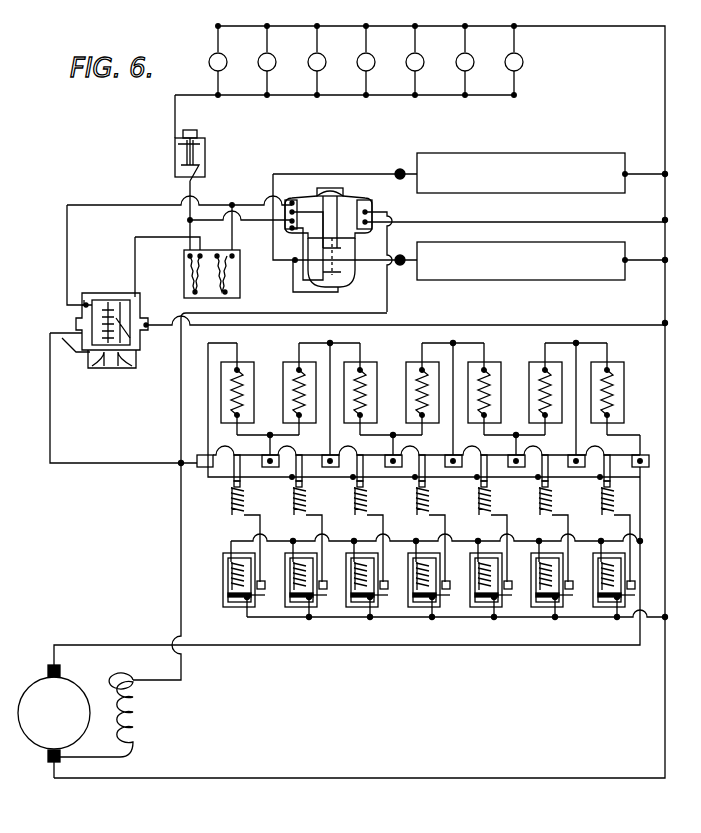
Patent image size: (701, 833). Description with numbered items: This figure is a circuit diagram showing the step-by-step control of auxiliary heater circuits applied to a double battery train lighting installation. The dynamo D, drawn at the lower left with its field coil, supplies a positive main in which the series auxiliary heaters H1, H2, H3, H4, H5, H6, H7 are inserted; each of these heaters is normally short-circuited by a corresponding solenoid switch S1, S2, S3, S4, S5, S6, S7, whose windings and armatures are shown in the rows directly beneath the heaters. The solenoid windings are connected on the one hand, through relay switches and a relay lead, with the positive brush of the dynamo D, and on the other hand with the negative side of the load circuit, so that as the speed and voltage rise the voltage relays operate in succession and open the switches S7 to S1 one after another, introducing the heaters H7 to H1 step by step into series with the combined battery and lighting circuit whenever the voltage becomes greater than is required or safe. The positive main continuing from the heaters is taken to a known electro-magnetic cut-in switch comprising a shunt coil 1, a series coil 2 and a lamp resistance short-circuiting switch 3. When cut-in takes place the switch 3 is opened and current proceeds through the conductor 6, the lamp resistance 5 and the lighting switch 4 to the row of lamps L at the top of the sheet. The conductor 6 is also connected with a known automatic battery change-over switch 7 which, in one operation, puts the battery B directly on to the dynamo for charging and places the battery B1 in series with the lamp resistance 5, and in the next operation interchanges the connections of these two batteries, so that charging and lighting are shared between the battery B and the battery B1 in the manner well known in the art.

The shunt coil 1 is at (123, 399).
The series coil 2 is at (111, 304).
The lamp resistance short-circuiting switch 3 is at (112, 307).
The lighting switch 4 is at (175, 160).
The lamp resistance 5 is at (240, 283).
The conductor 6 is at (103, 205).
The automatic battery change-over switch 7 is at (336, 195).
The lamps L is at (374, 61).
The battery B is at (541, 153).
The battery B1 is at (512, 271).
The auxiliary heater H1 is at (615, 381).
The auxiliary heater H2 is at (536, 376).
The auxiliary heater H3 is at (502, 380).
The auxiliary heater H4 is at (421, 335).
The auxiliary heater H5 is at (361, 383).
The auxiliary heater H6 is at (300, 382).
The auxiliary heater H7 is at (195, 389).
The solenoid switch S1 is at (614, 528).
The solenoid switch S2 is at (552, 528).
The solenoid switch S3 is at (491, 528).
The solenoid switch S4 is at (429, 528).
The solenoid switch S5 is at (367, 528).
The solenoid switch S6 is at (306, 528).
The solenoid switch S7 is at (244, 528).
The dynamo D is at (54, 721).